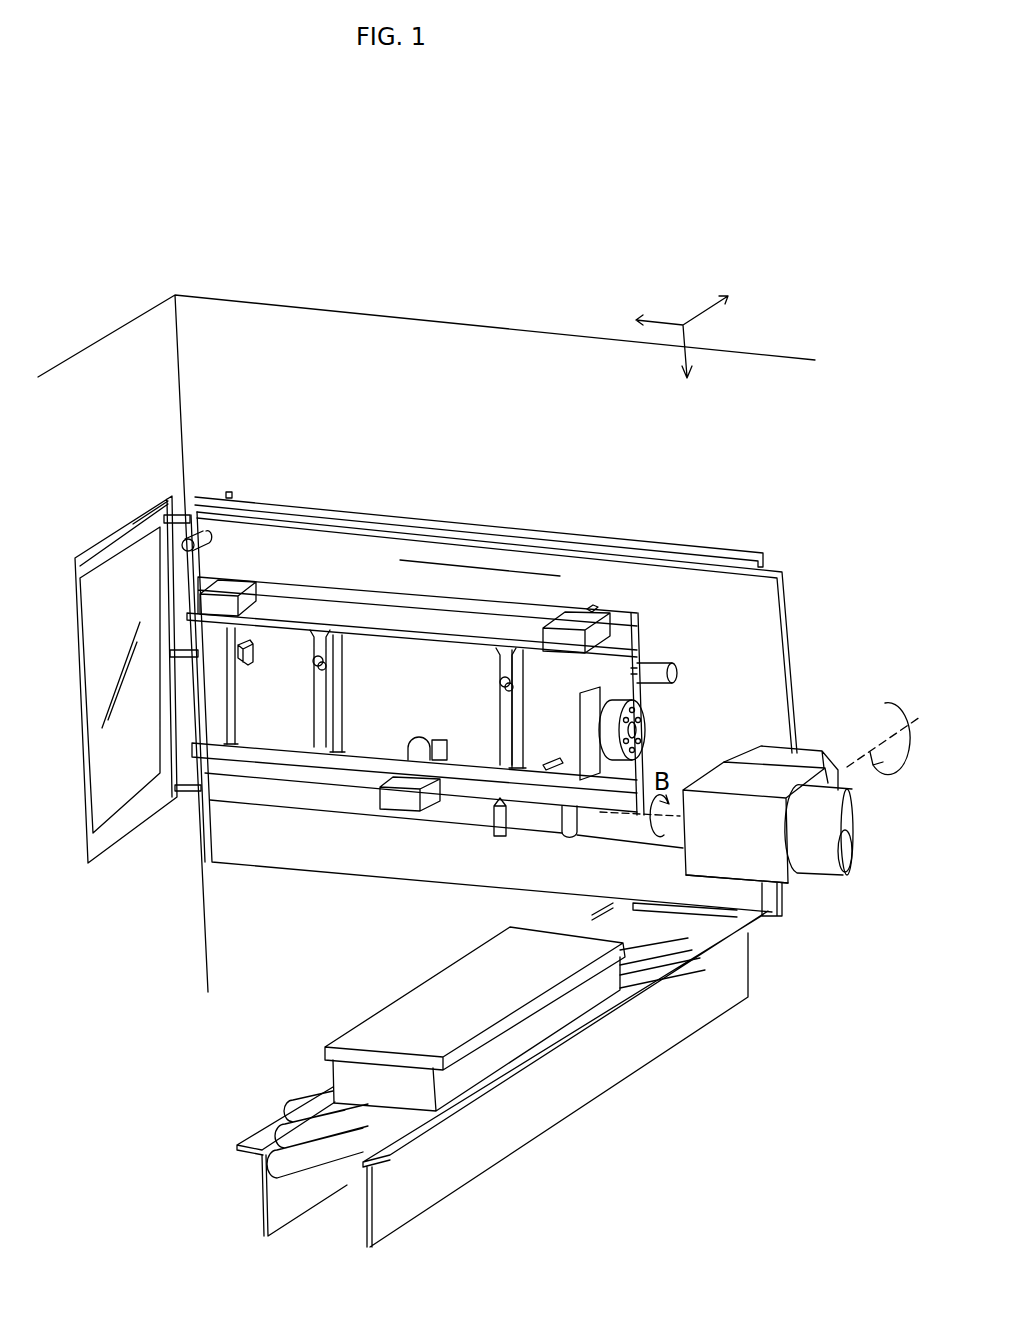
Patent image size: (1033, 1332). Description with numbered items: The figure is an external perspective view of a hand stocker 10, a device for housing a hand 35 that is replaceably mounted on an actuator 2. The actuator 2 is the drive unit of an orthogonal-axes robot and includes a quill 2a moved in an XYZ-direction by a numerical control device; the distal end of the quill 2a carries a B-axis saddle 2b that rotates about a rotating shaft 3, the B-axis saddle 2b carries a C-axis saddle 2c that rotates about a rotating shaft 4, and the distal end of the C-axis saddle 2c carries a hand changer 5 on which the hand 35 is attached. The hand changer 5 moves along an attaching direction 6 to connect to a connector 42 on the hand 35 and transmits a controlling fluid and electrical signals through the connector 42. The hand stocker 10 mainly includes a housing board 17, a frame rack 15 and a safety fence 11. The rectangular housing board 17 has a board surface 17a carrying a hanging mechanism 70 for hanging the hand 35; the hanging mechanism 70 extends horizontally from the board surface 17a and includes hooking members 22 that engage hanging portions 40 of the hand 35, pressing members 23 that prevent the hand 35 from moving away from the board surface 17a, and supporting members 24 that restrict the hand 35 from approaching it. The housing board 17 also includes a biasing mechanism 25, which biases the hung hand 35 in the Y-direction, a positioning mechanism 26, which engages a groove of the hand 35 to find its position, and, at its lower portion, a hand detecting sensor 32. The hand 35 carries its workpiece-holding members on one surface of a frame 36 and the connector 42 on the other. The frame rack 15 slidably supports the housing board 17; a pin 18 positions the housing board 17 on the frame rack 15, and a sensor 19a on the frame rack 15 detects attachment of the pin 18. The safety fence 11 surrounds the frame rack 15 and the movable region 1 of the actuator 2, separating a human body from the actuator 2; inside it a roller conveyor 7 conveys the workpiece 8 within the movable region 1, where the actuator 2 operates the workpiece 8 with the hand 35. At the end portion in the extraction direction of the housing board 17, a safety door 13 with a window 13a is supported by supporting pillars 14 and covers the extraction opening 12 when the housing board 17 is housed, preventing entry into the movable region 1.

The movable region 1 is at (553, 342).
The actuator 2 is at (735, 829).
The quill 2a is at (813, 862).
The B-axis saddle 2b is at (690, 858).
The C-axis saddle 2c is at (823, 750).
The rotating shaft 3 is at (641, 806).
The rotating shaft 4 is at (912, 712).
The hand changer 5 is at (748, 750).
The attaching direction 6 is at (662, 741).
The roller conveyor 7 is at (288, 1110).
The workpiece 8 is at (405, 1000).
The hand stocker 10 is at (796, 296).
The safety fence 11 is at (248, 318).
The extraction opening 12 is at (133, 524).
The safety door 13 is at (100, 548).
The window 13a is at (92, 641).
The supporting pillars 14 is at (183, 518).
The frame rack 15 is at (675, 542).
The housing board 17 is at (622, 558).
The board surface 17a is at (518, 568).
The pin 18 is at (210, 538).
The sensor 19a is at (229, 492).
The hooking members 22 is at (343, 643).
The pressing members 23 is at (313, 659).
The supporting members 24 is at (288, 577).
The biasing mechanism 25 is at (663, 662).
The positioning mechanism 26 is at (498, 826).
The hand detecting sensor 32 is at (569, 838).
The hand 35 is at (450, 590).
The frame 36 is at (355, 780).
The hanging portions 40 is at (316, 668).
The connector 42 is at (645, 710).
The hanging mechanism 70 is at (484, 689).